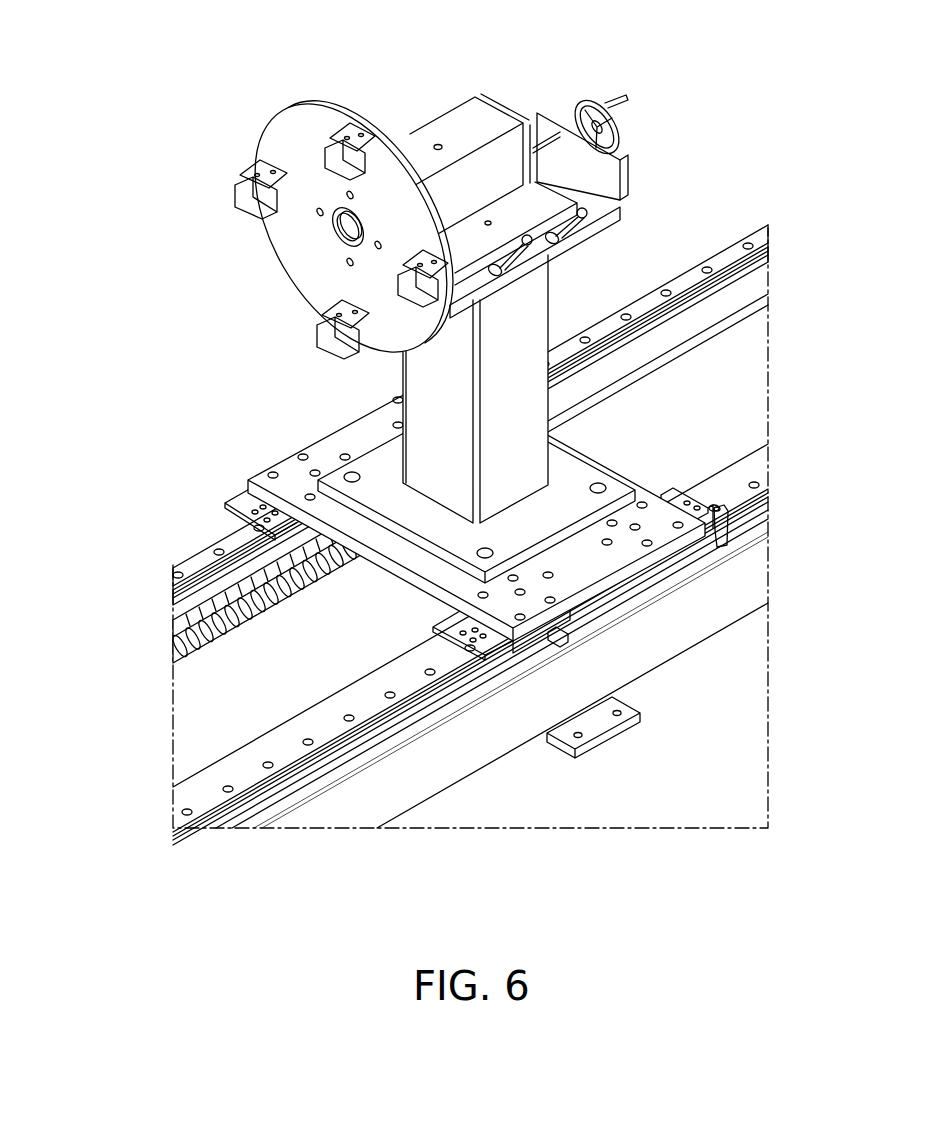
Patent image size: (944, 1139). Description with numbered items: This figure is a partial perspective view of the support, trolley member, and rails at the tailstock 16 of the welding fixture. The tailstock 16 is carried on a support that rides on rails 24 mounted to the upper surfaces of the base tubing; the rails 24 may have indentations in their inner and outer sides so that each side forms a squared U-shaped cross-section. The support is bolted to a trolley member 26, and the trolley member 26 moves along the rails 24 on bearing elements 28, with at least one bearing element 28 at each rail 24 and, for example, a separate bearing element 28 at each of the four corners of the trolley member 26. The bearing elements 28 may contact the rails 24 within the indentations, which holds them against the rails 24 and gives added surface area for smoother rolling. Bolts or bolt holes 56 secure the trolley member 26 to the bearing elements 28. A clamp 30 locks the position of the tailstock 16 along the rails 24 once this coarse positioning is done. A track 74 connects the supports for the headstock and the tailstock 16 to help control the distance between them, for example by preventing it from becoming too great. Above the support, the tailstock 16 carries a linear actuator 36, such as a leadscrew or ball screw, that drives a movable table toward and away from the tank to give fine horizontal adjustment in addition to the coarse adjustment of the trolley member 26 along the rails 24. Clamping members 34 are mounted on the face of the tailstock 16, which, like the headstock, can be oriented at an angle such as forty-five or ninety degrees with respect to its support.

The tailstock 16 is at (317, 257).
The rails 24 is at (190, 563).
The trolley member 26 is at (600, 567).
The bearing element 28 is at (258, 506).
The clamp 30 is at (724, 541).
The clamping members 34 is at (240, 181).
The linear actuator 36 is at (646, 121).
The bolts/bolt holes 56 is at (302, 456).
The track 74 is at (178, 626).